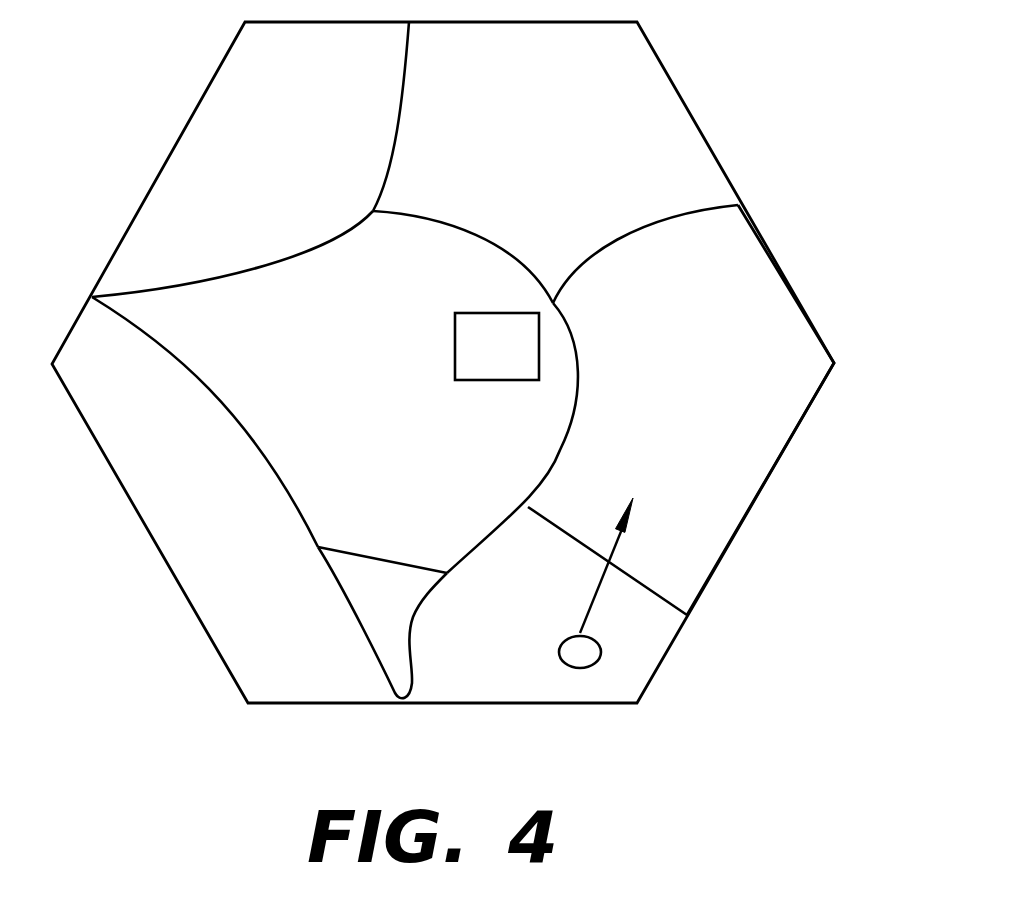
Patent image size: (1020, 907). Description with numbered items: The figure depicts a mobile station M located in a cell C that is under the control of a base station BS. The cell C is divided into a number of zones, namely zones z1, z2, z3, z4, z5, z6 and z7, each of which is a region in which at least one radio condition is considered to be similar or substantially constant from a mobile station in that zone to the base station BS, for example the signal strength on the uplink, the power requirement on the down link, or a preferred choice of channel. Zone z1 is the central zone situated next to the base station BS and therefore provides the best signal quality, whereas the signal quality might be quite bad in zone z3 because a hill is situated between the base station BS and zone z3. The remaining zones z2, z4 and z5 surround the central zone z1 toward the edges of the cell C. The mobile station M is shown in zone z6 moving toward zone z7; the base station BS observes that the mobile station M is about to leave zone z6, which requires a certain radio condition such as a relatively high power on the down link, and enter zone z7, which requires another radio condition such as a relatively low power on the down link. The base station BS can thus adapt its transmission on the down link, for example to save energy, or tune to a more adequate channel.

The zone z1 is at (335, 392).
The zone z2 is at (338, 116).
The zone z3 is at (631, 211).
The zone z4 is at (205, 422).
The zone z5 is at (382, 622).
The zone z6 is at (594, 561).
The zone z7 is at (743, 410).
The base station BS is at (497, 346).
The mobile station M is at (579, 587).
The cell C is at (886, 205).